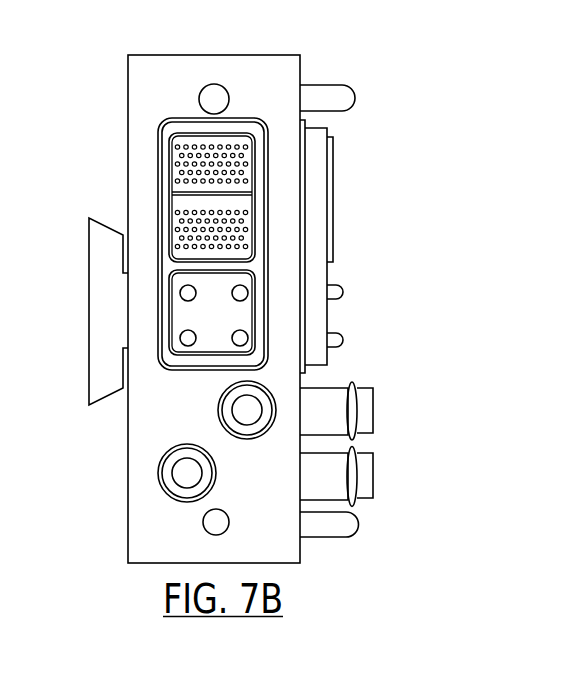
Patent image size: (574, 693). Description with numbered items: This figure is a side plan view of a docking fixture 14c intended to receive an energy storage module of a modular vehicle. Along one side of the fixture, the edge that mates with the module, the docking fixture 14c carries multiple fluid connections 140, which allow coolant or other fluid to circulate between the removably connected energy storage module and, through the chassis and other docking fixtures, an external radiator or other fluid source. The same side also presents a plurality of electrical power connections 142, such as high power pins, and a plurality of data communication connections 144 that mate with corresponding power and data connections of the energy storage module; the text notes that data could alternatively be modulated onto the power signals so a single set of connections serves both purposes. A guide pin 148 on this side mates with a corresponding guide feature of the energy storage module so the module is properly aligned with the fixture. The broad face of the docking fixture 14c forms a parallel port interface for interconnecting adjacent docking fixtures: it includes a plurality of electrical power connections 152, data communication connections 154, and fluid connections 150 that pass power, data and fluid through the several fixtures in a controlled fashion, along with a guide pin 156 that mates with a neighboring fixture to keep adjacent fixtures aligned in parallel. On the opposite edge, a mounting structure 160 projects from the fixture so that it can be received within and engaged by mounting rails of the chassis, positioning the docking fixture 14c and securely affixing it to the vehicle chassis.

The docking fixture 14c is at (413, 117).
The fluid connections 140 is at (380, 383).
The electrical power connections 142 is at (343, 290).
The data communication connections 144 is at (333, 202).
The guide pins 148 is at (340, 98).
The fluid connections 150 is at (172, 498).
The electrical power connections 152 is at (188, 341).
The data communication connections 154 is at (237, 146).
The guide pins 156 is at (223, 523).
The mounting structure 160 is at (100, 304).